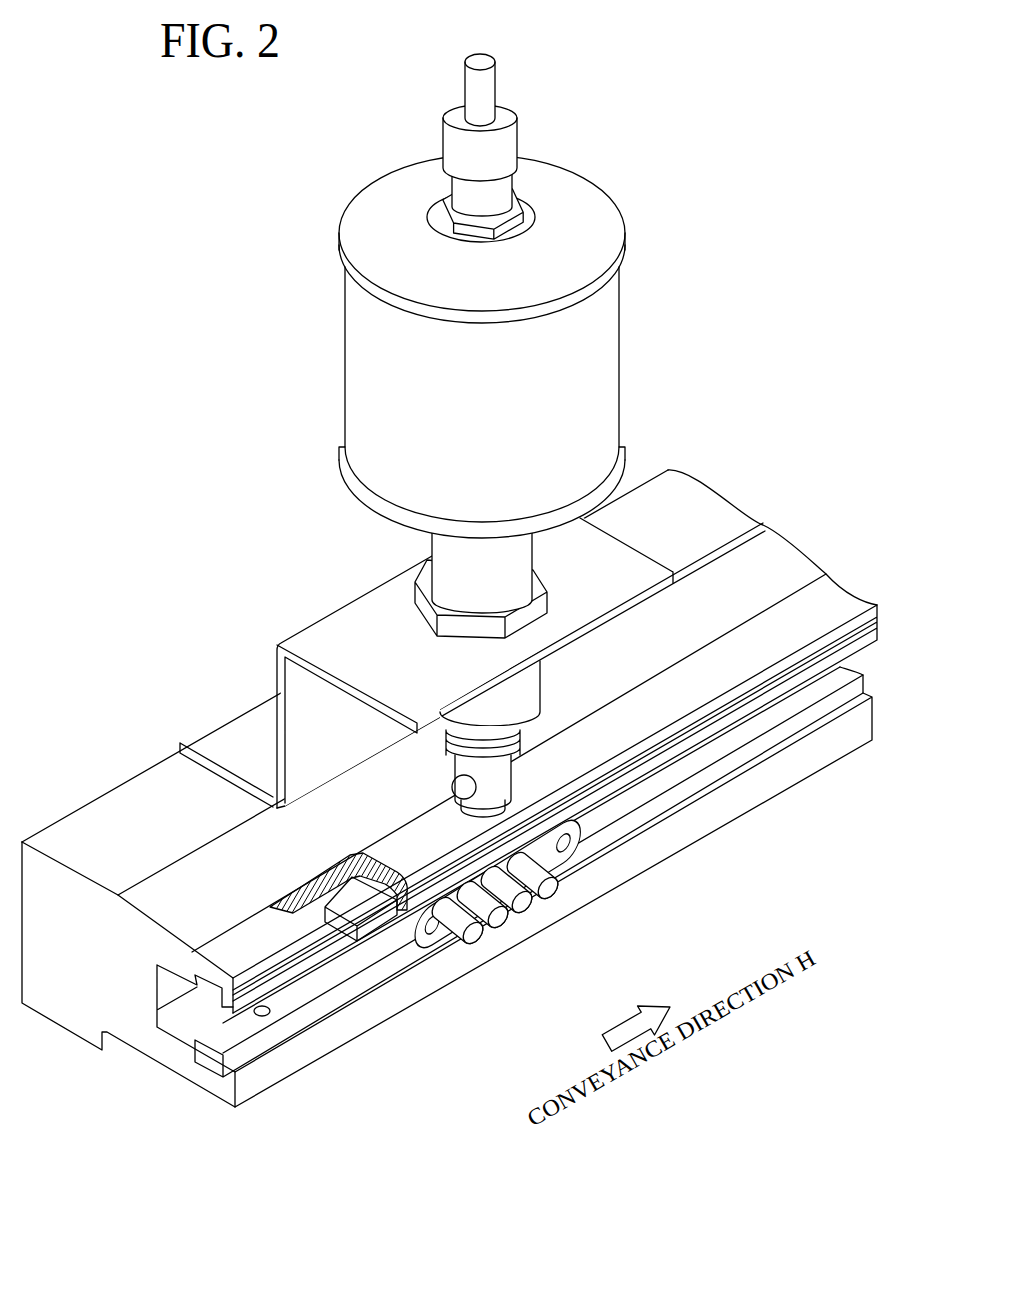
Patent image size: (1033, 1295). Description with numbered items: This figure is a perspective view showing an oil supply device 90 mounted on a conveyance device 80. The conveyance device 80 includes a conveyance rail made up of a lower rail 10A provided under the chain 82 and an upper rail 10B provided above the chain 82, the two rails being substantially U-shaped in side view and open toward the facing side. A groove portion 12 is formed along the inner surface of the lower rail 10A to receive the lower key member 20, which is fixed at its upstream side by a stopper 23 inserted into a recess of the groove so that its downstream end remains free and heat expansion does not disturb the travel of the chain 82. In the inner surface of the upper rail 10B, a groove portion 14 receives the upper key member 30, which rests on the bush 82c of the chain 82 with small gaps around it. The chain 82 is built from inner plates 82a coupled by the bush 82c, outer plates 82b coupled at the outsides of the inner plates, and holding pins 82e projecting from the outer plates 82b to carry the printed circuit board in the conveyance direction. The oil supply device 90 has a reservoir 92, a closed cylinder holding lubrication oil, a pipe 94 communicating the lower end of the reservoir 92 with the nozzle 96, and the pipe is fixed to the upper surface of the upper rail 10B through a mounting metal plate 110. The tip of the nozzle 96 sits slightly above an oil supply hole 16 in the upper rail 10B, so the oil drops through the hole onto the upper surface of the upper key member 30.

The lower rail 10A is at (532, 921).
The upper rail 10B is at (210, 973).
The groove portion 12 is at (186, 1052).
The groove portion 14 is at (182, 1003).
The oil supply hole 16 is at (452, 782).
The lower key member 20 is at (338, 993).
The stopper 23 is at (264, 1018).
The upper key member 30 is at (345, 892).
The conveyance device 80 is at (391, 435).
The chain 82 is at (558, 939).
The inner plate 82a is at (562, 874).
The outer plate 82b is at (448, 952).
The bush 82c is at (438, 946).
The holding pin 82e is at (557, 900).
The oil supply device 90 is at (625, 284).
The reservoir 92 is at (617, 378).
The pipe 94 is at (533, 553).
The nozzle 96 is at (505, 767).
The mounting metal plate 110 is at (277, 661).